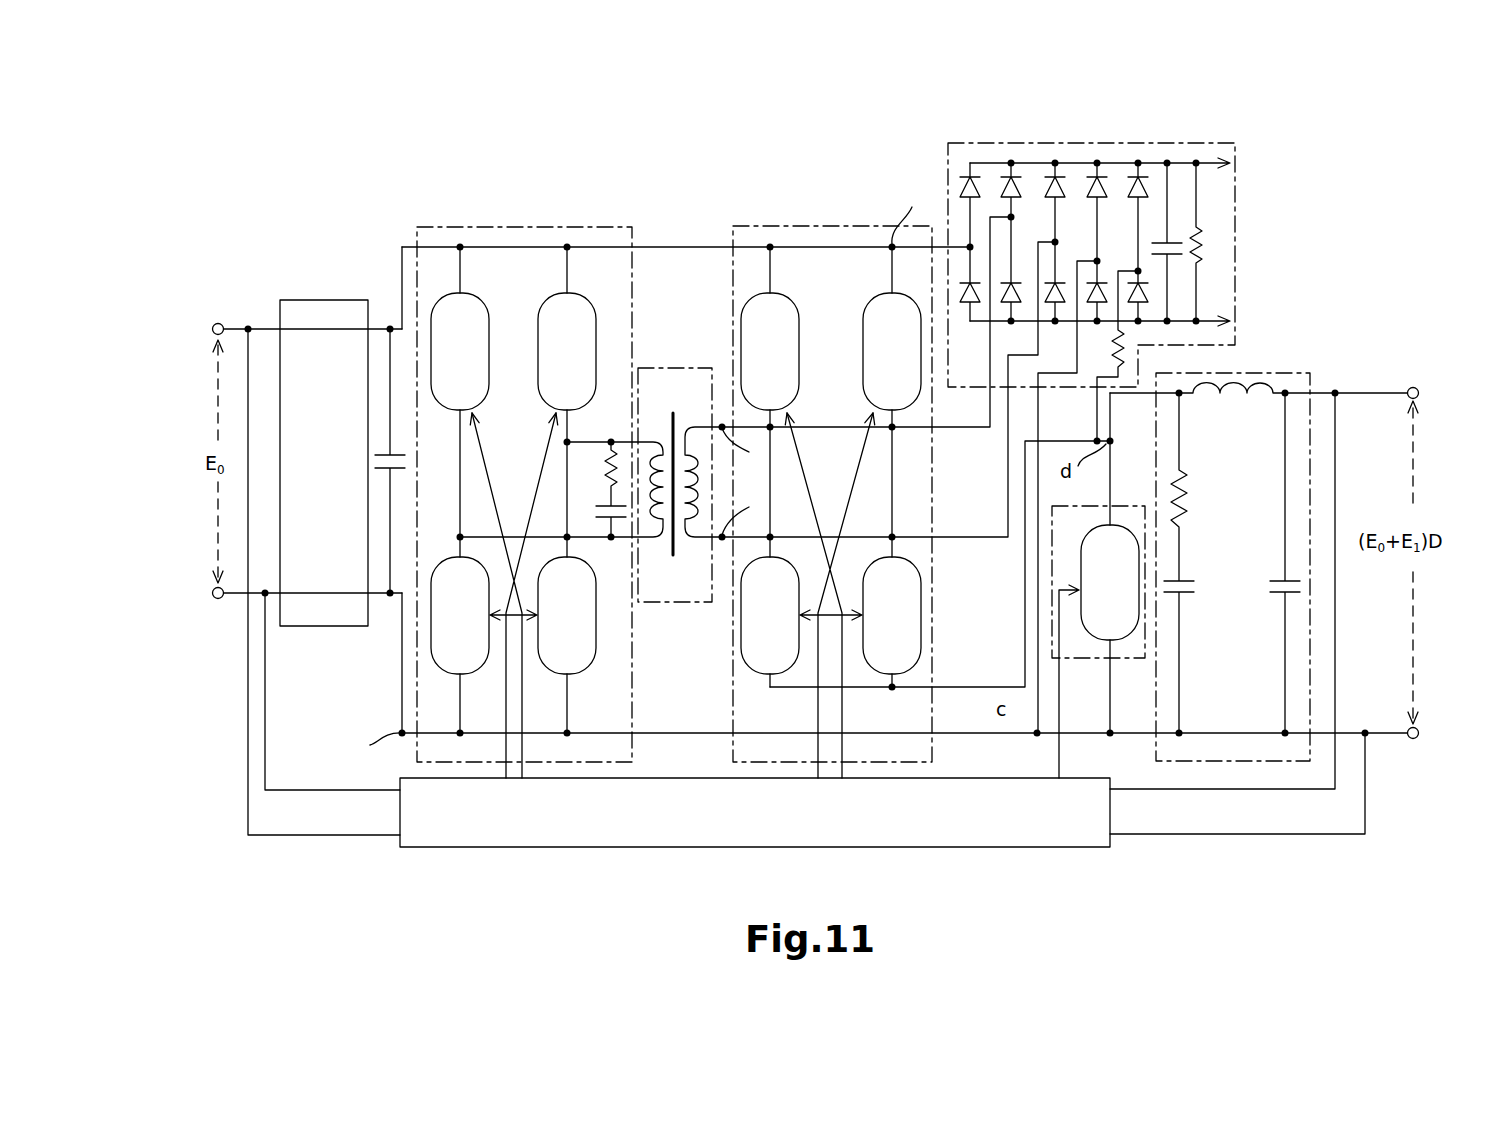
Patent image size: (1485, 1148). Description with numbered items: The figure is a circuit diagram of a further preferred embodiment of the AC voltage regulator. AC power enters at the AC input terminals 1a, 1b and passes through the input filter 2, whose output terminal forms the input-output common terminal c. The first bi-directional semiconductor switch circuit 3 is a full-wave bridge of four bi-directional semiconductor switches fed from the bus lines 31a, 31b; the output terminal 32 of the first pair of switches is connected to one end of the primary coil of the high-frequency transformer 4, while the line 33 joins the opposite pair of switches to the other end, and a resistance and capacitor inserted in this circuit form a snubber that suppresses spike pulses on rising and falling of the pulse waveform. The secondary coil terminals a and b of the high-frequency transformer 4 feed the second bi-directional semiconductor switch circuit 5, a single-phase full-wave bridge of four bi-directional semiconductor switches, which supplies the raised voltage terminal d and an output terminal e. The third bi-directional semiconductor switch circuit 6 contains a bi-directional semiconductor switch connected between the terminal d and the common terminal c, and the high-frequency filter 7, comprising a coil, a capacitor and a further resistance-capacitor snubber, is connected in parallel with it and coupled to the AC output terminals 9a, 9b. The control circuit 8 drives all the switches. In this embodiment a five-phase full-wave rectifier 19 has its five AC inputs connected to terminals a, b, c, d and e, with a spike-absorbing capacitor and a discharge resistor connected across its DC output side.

The AC input terminal 1a is at (212, 329).
The AC input terminal 1b is at (212, 593).
The input filter 2 is at (318, 298).
The first bi-directional semiconductor switch circuit 3 is at (538, 228).
The positive bus line 31a is at (432, 246).
The negative bus line 31b is at (429, 732).
The output terminal of the bi-directional semiconductor switches SW1 and SW2 32 is at (558, 445).
The connection line 33 is at (457, 534).
The high-frequency transformer 4 is at (660, 368).
The second bi-directional semiconductor switch circuit 5 is at (820, 226).
The third bi-directional semiconductor switch circuit 6 is at (1098, 585).
The high-frequency filter 7 is at (1270, 373).
The control circuit 8 is at (794, 848).
The AC output terminal 9a is at (1419, 392).
The AC output terminal 9b is at (1419, 733).
The five-phase full-wave rectifier 19 is at (1210, 143).